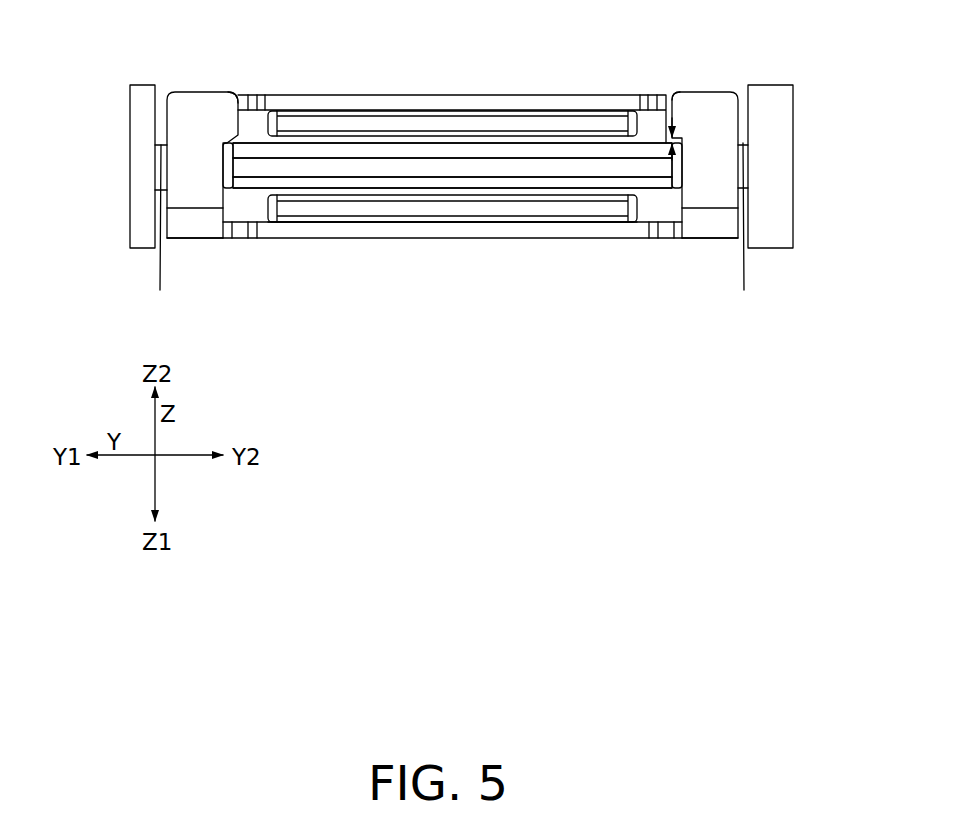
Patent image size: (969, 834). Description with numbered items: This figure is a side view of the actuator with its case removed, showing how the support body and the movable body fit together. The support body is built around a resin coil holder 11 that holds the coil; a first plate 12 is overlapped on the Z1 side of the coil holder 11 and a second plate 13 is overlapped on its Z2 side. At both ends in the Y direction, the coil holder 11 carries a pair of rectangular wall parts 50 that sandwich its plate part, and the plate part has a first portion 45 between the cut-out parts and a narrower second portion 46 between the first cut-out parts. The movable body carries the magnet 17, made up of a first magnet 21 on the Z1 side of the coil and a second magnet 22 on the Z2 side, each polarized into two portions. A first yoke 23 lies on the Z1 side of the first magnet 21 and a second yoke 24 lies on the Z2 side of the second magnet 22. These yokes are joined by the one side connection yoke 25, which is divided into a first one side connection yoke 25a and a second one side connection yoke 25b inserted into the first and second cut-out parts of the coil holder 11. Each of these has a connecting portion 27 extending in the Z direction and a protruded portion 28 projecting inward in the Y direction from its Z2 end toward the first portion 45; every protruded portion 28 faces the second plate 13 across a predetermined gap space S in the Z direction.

The coil holder 11 is at (587, 172).
The first plate 12 is at (347, 186).
The second plate 13 is at (348, 145).
The magnet 17 is at (483, 322).
The first magnet 21 is at (398, 210).
The second magnet 22 is at (423, 123).
The first yoke 23 is at (508, 227).
The second yoke 24 is at (512, 105).
The one side connection yoke 25 is at (557, 412).
The first one side connection yoke 25a is at (195, 208).
The second one side connection yoke 25b is at (707, 200).
The connecting portion 27 is at (193, 153).
The protruded portion 28 is at (230, 110).
The first portion 45 is at (532, 170).
The second portion 46 is at (455, 233).
The wall part 50 is at (137, 195).
The gap space S is at (678, 140).